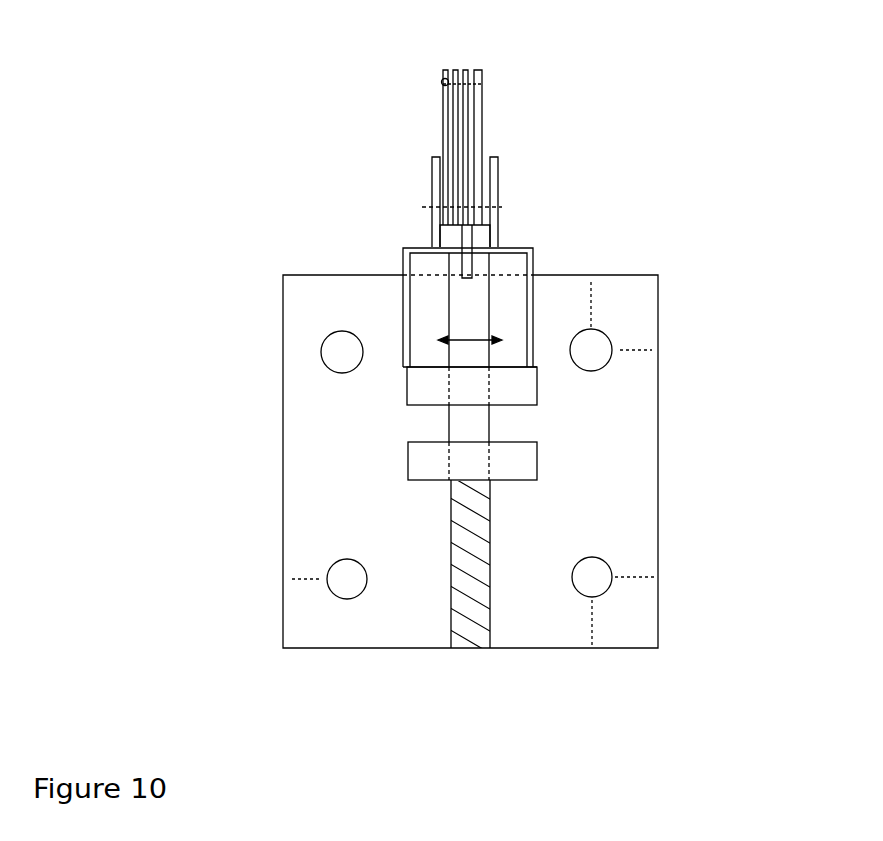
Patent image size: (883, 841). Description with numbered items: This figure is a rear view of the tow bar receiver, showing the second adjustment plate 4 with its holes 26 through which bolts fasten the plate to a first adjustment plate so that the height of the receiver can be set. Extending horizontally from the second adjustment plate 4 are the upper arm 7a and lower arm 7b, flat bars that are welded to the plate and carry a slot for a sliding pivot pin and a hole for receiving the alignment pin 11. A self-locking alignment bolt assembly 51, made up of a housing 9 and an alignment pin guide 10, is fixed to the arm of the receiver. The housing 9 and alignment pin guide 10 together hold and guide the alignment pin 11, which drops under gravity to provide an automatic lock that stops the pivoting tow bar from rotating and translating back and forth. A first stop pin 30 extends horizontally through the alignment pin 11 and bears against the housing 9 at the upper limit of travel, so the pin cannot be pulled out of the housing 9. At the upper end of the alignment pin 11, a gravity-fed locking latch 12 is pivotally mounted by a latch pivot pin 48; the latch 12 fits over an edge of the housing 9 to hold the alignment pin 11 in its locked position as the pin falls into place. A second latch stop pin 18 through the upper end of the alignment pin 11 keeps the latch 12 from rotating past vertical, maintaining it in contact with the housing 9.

The second adjustment plate 4 is at (282, 323).
The upper arm 7a is at (535, 390).
The lower arm 7b is at (533, 467).
The housing 9 is at (398, 267).
The alignment pin guide 10 is at (490, 215).
The alignment pin 11 is at (455, 432).
The locking latch 12 is at (465, 62).
The second latch stop pin 18 is at (440, 72).
The holes 26 is at (469, 465).
The first stop pin 30 is at (438, 345).
The latch pivot pin 48 is at (494, 78).
The self-locking alignment bolt assembly 51 is at (382, 177).